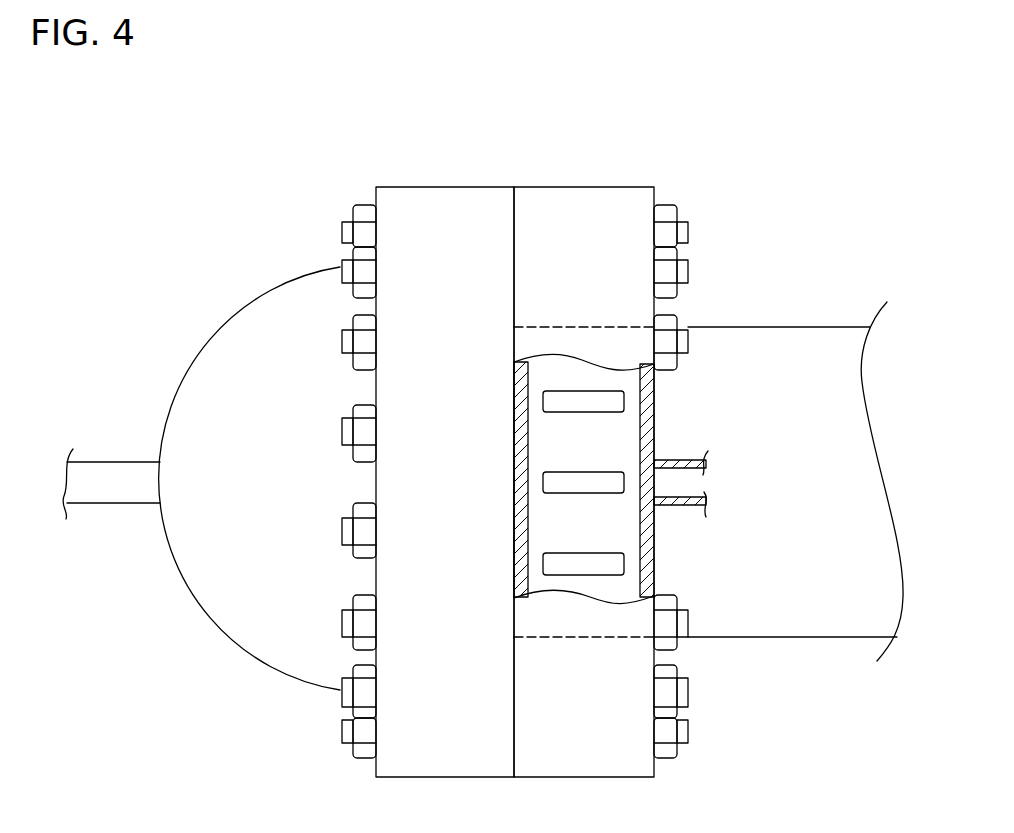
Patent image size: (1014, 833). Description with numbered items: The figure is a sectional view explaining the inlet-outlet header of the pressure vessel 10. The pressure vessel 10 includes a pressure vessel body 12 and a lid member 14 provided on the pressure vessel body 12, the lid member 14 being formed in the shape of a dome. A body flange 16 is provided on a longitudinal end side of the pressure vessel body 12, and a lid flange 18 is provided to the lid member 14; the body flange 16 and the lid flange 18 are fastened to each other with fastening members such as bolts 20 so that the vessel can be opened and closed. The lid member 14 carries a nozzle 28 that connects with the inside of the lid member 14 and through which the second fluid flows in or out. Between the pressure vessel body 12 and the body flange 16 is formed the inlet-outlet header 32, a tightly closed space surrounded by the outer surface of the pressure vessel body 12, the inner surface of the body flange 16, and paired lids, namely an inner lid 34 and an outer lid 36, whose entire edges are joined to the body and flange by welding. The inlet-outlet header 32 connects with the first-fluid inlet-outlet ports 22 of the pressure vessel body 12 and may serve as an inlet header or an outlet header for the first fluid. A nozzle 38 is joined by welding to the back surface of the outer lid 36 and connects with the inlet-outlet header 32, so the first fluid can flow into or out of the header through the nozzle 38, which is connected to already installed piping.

The pressure vessel 10 is at (221, 226).
The pressure vessel body 12 is at (778, 326).
The lid member 14 is at (240, 620).
The body flange 16 is at (586, 186).
The lid flange 18 is at (448, 186).
The bolts 20 is at (342, 228).
The first-fluid inlet-outlet ports 22 is at (590, 413).
The nozzle 28 is at (112, 504).
The inlet-outlet header 32 is at (656, 372).
The inner lid 34 is at (513, 520).
The outer lid 36 is at (657, 548).
The nozzle 38 is at (684, 460).